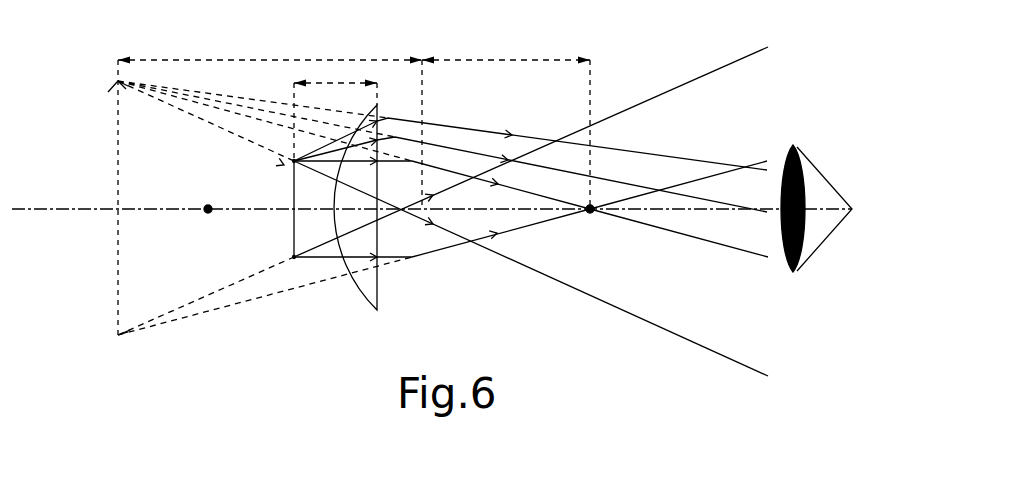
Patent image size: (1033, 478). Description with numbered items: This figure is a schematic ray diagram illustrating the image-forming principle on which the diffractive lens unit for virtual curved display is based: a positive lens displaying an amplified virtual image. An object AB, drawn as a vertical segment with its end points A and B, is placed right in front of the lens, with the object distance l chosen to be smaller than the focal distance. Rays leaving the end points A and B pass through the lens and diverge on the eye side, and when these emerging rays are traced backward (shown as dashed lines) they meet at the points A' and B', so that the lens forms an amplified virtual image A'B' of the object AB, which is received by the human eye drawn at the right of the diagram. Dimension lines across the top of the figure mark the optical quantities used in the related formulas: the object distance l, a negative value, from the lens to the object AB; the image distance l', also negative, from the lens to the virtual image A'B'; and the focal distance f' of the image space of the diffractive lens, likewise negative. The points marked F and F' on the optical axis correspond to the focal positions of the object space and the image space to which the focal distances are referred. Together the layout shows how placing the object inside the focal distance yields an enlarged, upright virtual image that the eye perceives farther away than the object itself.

The end of object AB A is at (280, 162).
The end of object AB B is at (280, 251).
The end of virtual image A'B' A' is at (106, 88).
The end of virtual image A' B' is at (107, 335).
The front focal point F is at (207, 218).
The rear focal point F' is at (588, 147).
The object distance l is at (335, 77).
The image distance l' is at (270, 52).
The focal distance of image space f' is at (506, 52).